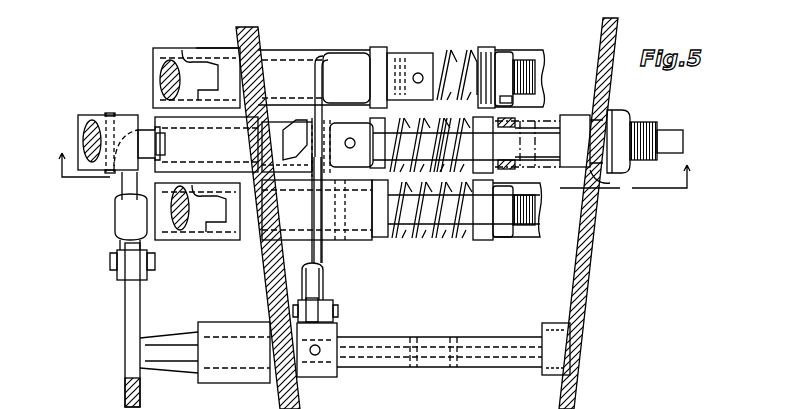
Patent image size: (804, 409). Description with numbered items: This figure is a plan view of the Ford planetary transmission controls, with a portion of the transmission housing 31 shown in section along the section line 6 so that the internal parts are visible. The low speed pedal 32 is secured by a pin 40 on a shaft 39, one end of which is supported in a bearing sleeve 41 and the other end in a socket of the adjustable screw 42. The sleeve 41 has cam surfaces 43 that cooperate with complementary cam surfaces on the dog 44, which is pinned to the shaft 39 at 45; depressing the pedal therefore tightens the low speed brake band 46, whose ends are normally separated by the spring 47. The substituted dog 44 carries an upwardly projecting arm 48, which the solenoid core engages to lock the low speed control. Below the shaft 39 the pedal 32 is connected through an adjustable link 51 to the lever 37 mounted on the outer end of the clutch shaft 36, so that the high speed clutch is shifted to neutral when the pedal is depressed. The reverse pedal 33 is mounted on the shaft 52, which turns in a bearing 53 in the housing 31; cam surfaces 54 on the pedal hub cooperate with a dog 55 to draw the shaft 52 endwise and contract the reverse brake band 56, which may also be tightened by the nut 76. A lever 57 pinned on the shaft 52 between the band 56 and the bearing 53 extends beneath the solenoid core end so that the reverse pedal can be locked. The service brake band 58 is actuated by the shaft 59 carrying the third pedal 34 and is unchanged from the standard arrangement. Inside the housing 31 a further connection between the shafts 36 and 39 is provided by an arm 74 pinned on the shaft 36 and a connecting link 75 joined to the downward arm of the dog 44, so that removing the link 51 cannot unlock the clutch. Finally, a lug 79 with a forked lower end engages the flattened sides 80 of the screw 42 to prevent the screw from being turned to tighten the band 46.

The section line 6- 6 is at (372, 175).
The transmission housing 31 is at (266, 273).
The pedal 32 is at (100, 118).
The pedal 33 is at (165, 62).
The third pedal 34 is at (182, 236).
The shaft 36 is at (478, 345).
The lever 37 is at (125, 298).
The shaft 39 is at (78, 140).
The pin 40 is at (111, 114).
The bearing sleeve 41 is at (256, 144).
The adjustable screw 42 is at (565, 118).
The cam surfaces 43 is at (295, 125).
The dog 44 is at (352, 141).
The pin 45 is at (317, 210).
The brake band 46 is at (484, 124).
The spring 47 is at (420, 132).
The arm 48 is at (325, 242).
The adjustable link 51 is at (115, 208).
The shaft 52 is at (434, 58).
The bearing 53 is at (302, 55).
The cam surfaces 54 is at (190, 60).
The dog 55 is at (215, 50).
The brake band 56 is at (380, 47).
The lever 57 is at (346, 55).
The service brake band 58 is at (380, 240).
The shaft 59 is at (442, 238).
The arm 74 is at (330, 360).
The connecting link 75 is at (308, 250).
The nut 76 is at (512, 60).
The lug 79 is at (510, 118).
The flattened sides 80 is at (524, 146).